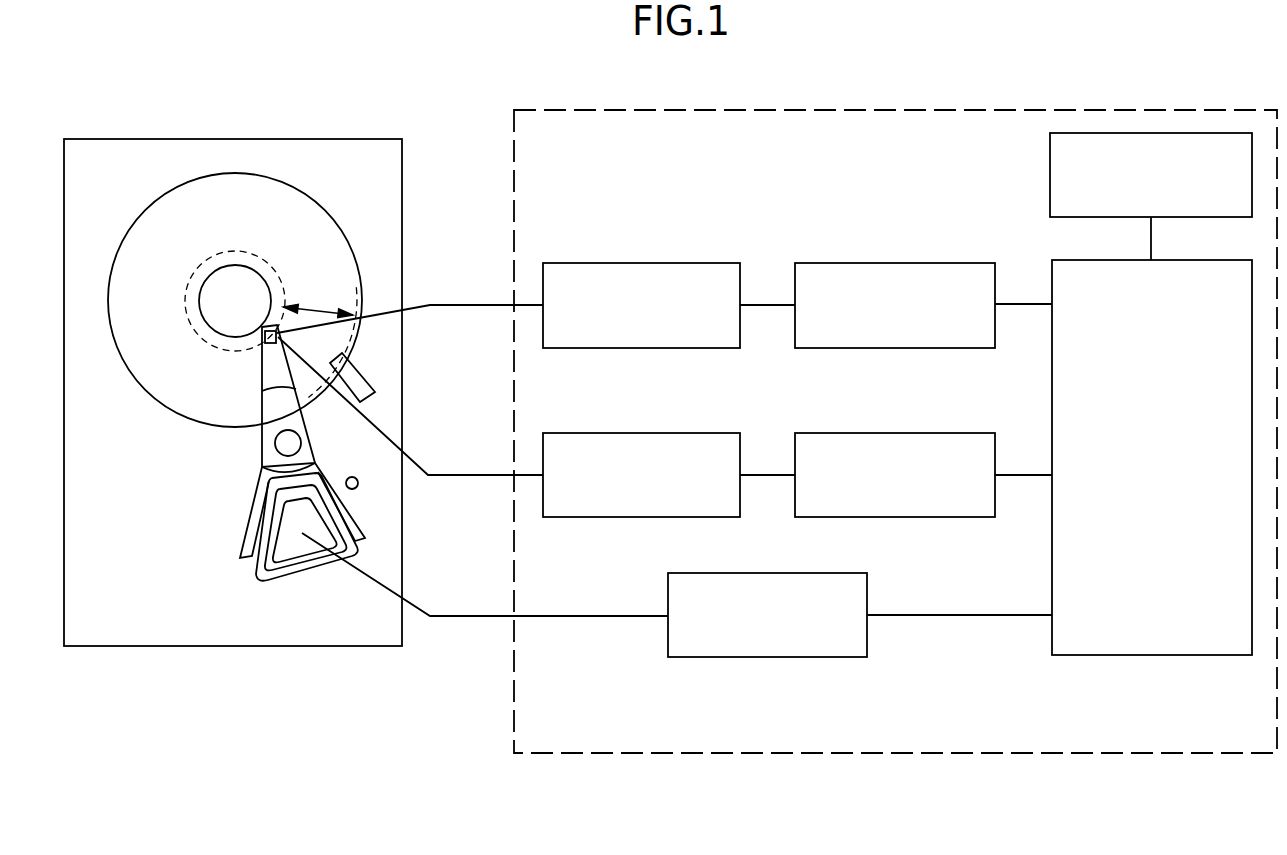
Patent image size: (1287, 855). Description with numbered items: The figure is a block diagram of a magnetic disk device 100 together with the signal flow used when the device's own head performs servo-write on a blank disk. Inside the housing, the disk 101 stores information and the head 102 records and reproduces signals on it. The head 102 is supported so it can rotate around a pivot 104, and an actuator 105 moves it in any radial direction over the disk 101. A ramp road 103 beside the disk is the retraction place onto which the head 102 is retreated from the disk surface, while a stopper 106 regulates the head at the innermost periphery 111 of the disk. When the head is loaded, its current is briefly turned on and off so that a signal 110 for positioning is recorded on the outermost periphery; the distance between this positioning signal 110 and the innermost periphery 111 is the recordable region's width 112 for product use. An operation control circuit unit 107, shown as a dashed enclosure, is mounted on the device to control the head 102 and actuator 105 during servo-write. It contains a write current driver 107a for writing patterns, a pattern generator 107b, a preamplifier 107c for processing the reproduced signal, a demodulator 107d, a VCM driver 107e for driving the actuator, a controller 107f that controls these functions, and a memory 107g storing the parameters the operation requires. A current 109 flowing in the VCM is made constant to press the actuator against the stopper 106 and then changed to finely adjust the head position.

The magnetic disk device 100 is at (371, 139).
The disk 101 is at (152, 240).
The head 102 is at (260, 342).
The ramp road 103 is at (362, 389).
The pivot 104 is at (276, 445).
The actuator 105 is at (252, 535).
The stopper 106 is at (358, 485).
The operation control circuit unit 107 is at (900, 753).
The write current driver 107a is at (643, 263).
The pattern generator 107b is at (867, 263).
The preamplifier 107c is at (598, 517).
The demodulator 107d is at (938, 517).
The VCM driver 107e is at (768, 657).
The controller 107f is at (1153, 655).
The memory 107g is at (1050, 172).
The current 109 is at (383, 587).
The signal for positioning 110 is at (345, 351).
The innermost periphery 111 is at (248, 253).
The recordable region's width 112 is at (324, 311).